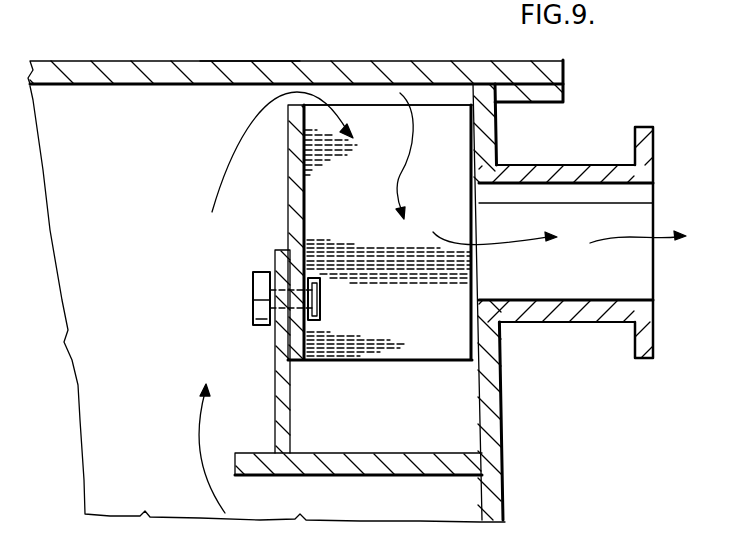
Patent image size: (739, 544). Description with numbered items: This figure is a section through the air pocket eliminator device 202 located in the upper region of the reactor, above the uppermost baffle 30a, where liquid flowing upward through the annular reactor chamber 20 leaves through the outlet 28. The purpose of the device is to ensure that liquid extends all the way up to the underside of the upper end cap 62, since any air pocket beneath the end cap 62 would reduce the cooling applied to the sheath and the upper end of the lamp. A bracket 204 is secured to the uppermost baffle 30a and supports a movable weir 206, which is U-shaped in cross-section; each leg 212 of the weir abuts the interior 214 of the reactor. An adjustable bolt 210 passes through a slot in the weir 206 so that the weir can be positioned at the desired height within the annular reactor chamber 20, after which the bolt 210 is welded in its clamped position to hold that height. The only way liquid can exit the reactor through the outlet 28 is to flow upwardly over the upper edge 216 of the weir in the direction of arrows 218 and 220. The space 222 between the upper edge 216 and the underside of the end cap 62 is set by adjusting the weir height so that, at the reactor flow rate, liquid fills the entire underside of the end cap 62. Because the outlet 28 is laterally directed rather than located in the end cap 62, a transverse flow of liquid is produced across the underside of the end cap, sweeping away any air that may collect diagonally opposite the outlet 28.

The annular reactor chamber 20 is at (167, 197).
The outlet 28 is at (605, 170).
The uppermost baffle 30a is at (257, 453).
The upper end cap 62 is at (240, 58).
The air pocket eliminator device 202 is at (97, 84).
The bracket 204 is at (288, 426).
The movable weir 206 is at (413, 338).
The adjustable bolt 210 is at (254, 283).
The leg 212 is at (447, 117).
The interior of the reactor 214 is at (461, 137).
The upper edge of the weir 216 is at (367, 107).
The arrow 218 is at (229, 152).
The arrow 220 is at (431, 156).
The space 222 is at (340, 94).